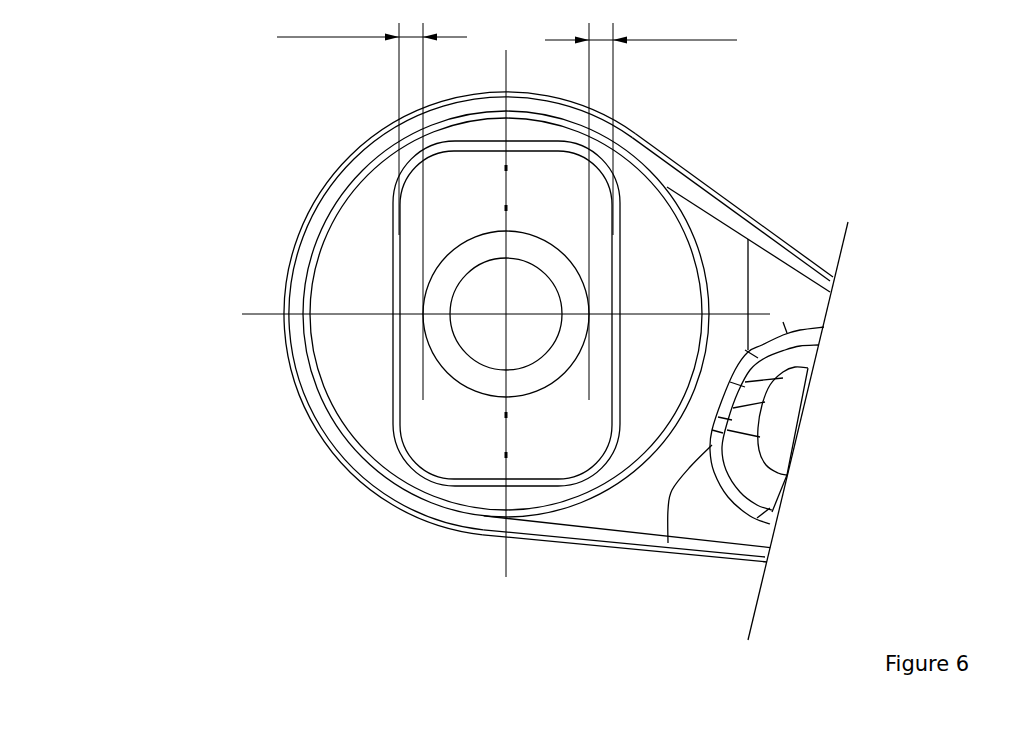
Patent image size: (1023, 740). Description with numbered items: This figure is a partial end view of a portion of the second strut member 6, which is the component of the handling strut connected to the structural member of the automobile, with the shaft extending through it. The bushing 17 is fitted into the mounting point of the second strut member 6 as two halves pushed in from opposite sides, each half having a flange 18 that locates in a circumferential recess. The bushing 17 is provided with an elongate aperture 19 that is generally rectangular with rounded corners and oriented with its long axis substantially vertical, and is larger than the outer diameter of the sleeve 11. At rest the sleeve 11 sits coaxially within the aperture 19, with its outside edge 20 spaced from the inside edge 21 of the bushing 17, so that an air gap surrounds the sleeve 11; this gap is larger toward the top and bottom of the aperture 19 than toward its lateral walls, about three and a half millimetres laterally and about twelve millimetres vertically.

The second strut member 6 is at (775, 247).
The sleeve 11 is at (440, 343).
The bushing 17 is at (660, 247).
The flange 18 is at (665, 188).
The elongate aperture 19 is at (555, 472).
The outside edge 20 is at (423, 300).
The inside edge 21 is at (400, 245).